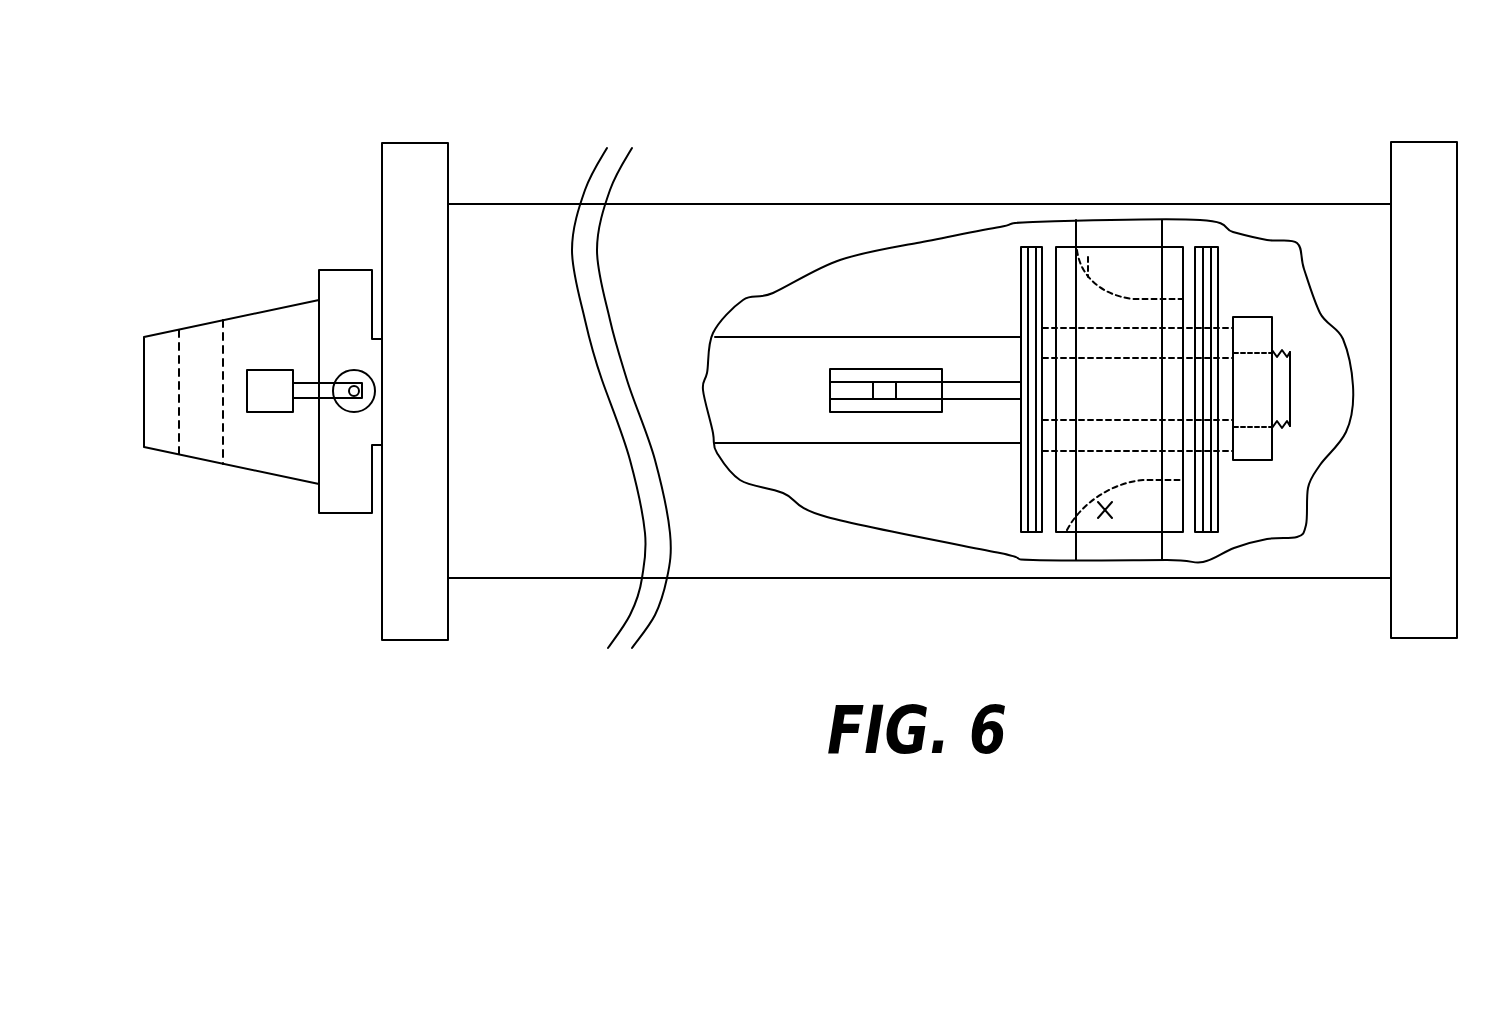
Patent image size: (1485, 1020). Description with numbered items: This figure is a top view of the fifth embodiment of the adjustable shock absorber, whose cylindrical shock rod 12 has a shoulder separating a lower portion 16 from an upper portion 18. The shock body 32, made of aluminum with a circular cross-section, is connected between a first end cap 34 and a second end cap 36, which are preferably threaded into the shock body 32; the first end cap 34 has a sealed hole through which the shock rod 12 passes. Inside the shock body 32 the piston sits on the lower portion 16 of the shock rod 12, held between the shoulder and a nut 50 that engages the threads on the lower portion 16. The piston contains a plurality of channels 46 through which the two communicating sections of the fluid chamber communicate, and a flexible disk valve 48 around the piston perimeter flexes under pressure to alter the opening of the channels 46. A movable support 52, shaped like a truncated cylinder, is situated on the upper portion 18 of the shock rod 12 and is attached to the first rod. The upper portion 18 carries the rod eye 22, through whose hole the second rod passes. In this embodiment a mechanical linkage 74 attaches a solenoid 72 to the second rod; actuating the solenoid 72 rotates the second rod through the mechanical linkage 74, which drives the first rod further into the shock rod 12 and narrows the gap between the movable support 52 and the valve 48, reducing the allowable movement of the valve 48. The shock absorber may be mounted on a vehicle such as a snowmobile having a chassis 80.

The shock rod 12 is at (757, 432).
The lower portion 16 is at (1290, 392).
The upper portion 18 is at (968, 432).
The rod eye 22 is at (238, 318).
The shock body 32 is at (690, 204).
The first end cap 34 is at (420, 160).
The second end cap 36 is at (1411, 165).
The channels 46 is at (1088, 250).
The valve 48 is at (1030, 258).
The nut 50 is at (1248, 317).
The movable support 52 is at (885, 390).
The solenoid 72 is at (275, 382).
The mechanical linkage 74 is at (330, 392).
The chassis 80 is at (1278, 350).